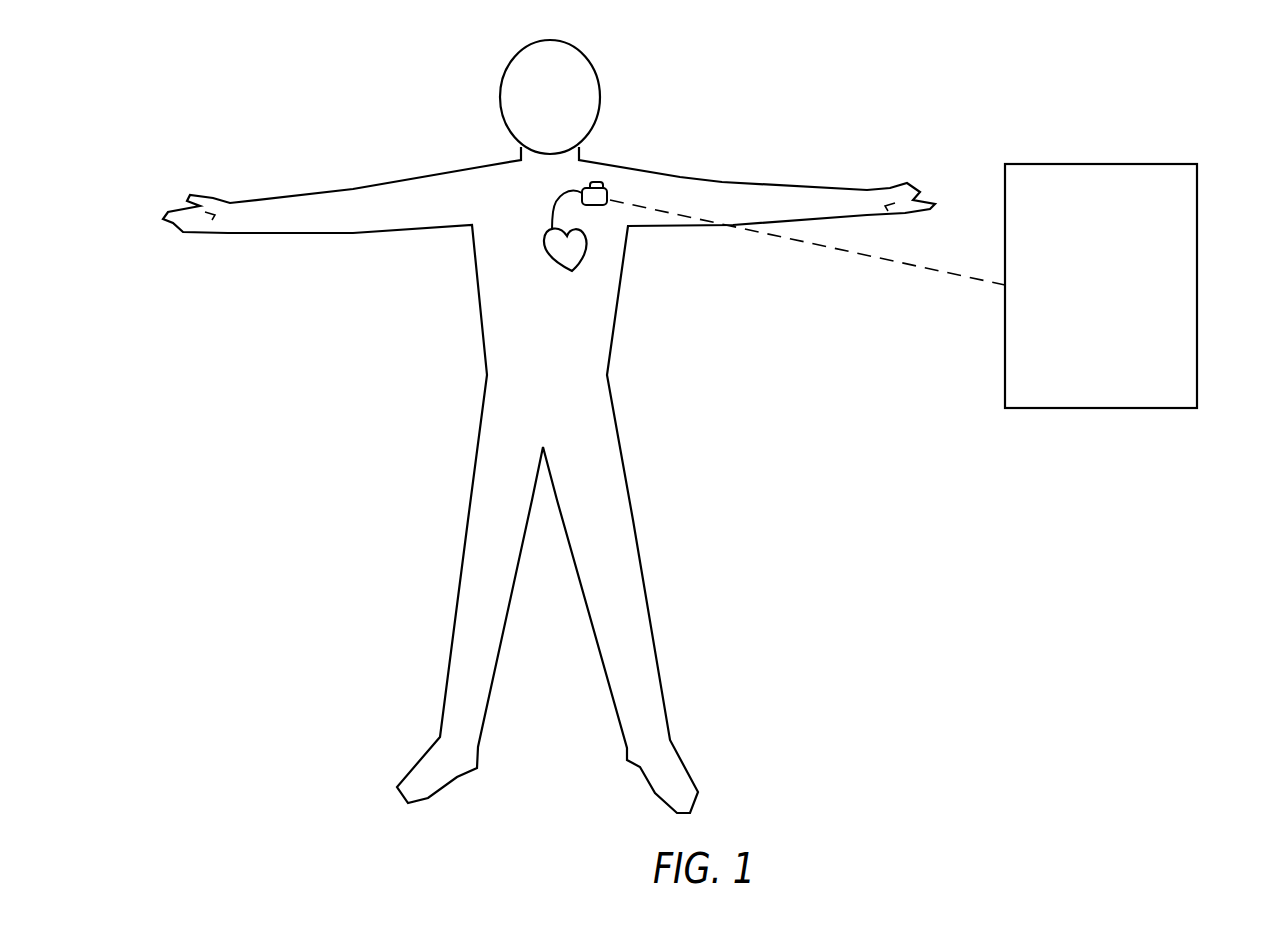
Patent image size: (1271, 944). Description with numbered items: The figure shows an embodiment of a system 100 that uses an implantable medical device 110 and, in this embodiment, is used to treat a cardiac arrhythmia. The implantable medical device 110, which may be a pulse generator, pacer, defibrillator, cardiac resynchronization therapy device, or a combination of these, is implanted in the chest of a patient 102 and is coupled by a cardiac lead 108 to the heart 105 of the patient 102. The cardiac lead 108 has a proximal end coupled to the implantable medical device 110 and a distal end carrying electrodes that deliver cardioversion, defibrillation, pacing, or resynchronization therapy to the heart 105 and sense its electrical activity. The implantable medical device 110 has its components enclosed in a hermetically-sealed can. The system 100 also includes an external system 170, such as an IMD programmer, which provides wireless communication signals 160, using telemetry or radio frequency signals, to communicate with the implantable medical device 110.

The system 100 is at (1092, 753).
The patient 102 is at (487, 337).
The heart 105 is at (550, 263).
The cardiac lead 108 is at (560, 210).
The implantable medical device 110 is at (608, 193).
The wireless communication signals 160 is at (885, 258).
The external system 170 is at (1197, 212).